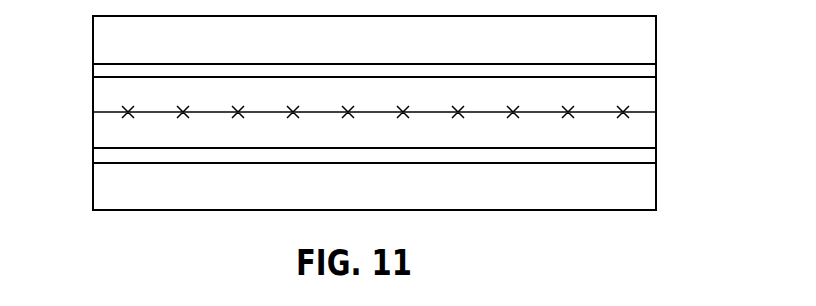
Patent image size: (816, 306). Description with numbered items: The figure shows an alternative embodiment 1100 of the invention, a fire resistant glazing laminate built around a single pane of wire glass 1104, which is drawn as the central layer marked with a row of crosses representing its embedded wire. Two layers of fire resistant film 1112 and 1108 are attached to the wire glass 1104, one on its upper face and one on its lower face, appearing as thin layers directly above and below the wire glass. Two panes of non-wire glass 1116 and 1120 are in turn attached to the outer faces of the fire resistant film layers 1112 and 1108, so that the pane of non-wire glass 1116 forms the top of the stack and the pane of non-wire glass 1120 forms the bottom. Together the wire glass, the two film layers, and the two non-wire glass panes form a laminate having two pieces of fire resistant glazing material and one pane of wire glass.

The alternative embodiment 1100 is at (712, 74).
The pane of non-wire glass 1116 is at (381, 46).
The layer of fire resistant film 1112 is at (91, 71).
The pane of wire glass 1104 is at (102, 133).
The layer of fire resistant film 1108 is at (91, 154).
The pane of non-wire glass 1120 is at (344, 194).